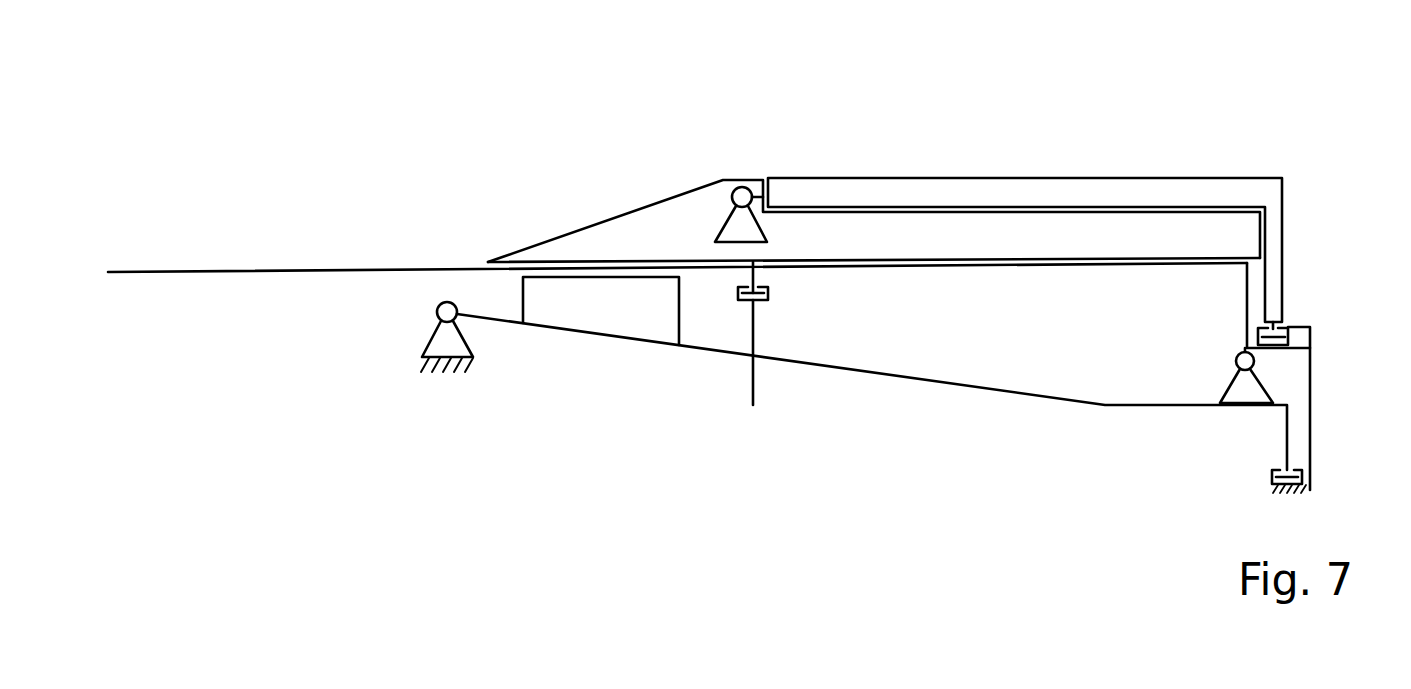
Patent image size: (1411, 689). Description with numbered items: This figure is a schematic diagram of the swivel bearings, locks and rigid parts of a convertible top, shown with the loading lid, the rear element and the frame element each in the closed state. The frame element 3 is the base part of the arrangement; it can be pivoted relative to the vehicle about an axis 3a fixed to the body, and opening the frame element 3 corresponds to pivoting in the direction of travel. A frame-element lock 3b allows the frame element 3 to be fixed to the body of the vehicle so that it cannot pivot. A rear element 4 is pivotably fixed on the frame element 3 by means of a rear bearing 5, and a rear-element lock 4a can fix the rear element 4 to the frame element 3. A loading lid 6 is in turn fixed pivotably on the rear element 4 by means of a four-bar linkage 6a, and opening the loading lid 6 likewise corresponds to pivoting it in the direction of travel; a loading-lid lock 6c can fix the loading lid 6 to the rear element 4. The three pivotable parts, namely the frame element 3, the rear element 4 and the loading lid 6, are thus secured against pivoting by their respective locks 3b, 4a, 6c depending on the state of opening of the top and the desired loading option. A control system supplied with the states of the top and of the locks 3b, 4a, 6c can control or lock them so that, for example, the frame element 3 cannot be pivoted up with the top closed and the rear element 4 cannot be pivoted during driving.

The frame element 3 is at (965, 385).
The axis fixed to the body 3a is at (450, 317).
The frame-element lock 3b is at (1272, 482).
The rear element 4 is at (1178, 233).
The rear-element lock 4a is at (768, 295).
The rear bearing 5 is at (1237, 357).
The loading lid 6 is at (958, 185).
The four-bar linkage 6a is at (743, 187).
The loading-lid lock 6c is at (1288, 328).